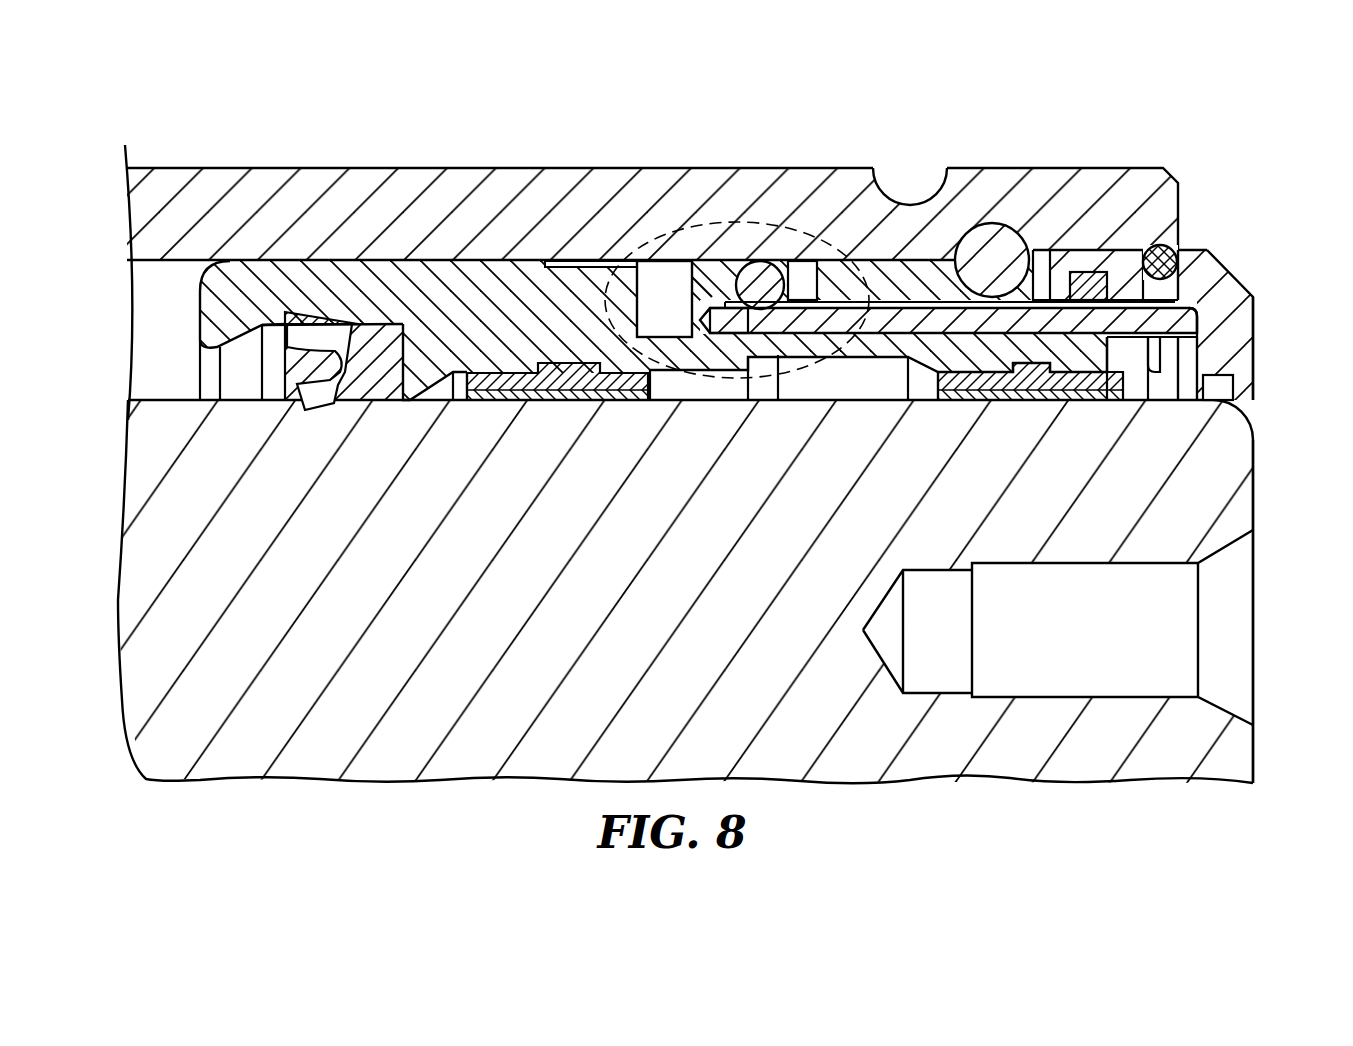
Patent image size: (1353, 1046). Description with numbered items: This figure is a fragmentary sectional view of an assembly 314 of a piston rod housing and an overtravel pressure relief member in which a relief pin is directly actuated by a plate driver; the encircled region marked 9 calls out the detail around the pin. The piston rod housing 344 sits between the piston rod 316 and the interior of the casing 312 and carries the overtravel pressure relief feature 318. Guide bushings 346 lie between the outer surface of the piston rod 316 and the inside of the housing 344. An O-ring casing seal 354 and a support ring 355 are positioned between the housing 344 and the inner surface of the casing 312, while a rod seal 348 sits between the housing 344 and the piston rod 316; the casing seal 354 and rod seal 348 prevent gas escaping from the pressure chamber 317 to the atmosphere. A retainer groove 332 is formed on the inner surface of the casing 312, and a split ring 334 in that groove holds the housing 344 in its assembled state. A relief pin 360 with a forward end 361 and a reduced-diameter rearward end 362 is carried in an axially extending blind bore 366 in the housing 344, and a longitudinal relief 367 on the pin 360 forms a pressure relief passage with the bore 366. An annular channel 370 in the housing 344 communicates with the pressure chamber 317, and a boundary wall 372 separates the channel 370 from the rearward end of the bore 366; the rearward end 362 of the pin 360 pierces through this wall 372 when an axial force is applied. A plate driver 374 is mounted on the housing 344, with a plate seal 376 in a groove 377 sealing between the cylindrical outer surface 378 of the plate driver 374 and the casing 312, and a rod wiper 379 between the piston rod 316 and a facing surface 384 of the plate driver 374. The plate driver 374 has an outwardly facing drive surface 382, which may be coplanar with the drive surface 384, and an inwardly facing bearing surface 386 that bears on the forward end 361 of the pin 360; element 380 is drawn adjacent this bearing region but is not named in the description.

The detail region 9 is at (640, 236).
The casing 312 is at (288, 190).
The assembly 314 is at (598, 125).
The piston rod 316 is at (150, 528).
The pressure chamber 317 is at (140, 352).
The overtravel pressure relief feature 318 is at (900, 142).
The retainer groove 332 is at (985, 240).
The split ring 334 is at (1012, 250).
The piston rod housing 344 is at (487, 290).
The guide bushings 346 is at (536, 395).
The rod seal 348 is at (355, 385).
The O-ring casing seal 354 is at (757, 275).
The support ring 355 is at (800, 278).
The relief pin 360 is at (905, 330).
The forward end 361 is at (1200, 312).
The rearward end 362 is at (725, 328).
The blind bore 366 is at (985, 337).
The longitudinal relief 367 is at (870, 300).
The annular channel 370 is at (648, 297).
The boundary wall 372 is at (700, 285).
The plate driver 374 is at (1262, 315).
The plate seal 376 is at (1160, 255).
The groove 377 is at (1152, 262).
The cylindrical outer surface 378 is at (1090, 247).
The rod wiper 379 is at (1224, 385).
The clip 380 is at (1180, 368).
The drive surface 382 is at (1256, 342).
The facing surface 384 is at (1256, 478).
The bearing surface 386 is at (1146, 345).